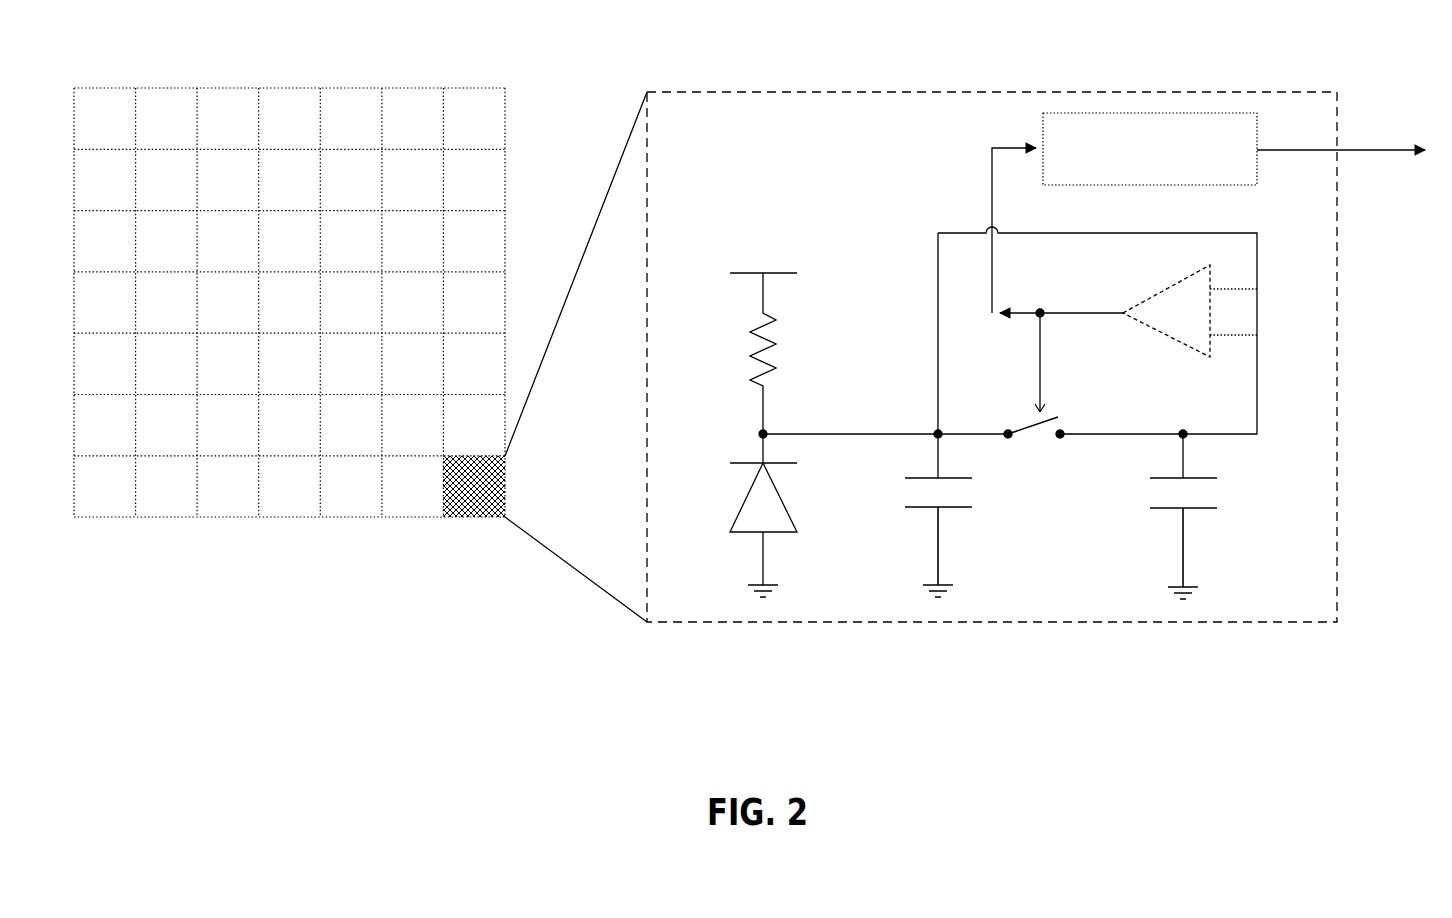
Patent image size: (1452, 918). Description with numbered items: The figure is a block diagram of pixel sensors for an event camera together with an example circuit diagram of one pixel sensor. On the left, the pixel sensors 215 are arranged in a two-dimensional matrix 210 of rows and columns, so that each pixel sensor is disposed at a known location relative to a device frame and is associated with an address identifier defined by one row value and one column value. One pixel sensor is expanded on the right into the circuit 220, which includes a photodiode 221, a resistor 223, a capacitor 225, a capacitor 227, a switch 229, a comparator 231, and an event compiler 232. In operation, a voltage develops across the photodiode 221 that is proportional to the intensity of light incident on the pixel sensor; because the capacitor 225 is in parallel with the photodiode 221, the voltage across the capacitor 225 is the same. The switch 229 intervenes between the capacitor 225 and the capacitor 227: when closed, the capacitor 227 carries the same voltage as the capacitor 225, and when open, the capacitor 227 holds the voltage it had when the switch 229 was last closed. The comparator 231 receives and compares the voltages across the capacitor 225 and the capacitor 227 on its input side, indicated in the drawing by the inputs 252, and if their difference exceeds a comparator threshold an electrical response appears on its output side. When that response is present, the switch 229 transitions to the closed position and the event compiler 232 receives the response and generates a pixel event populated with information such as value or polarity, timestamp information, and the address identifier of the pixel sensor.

The 2D matrix 210 is at (259, 88).
The pixel sensor 215 is at (296, 311).
The circuit 220 is at (694, 92).
The photodiode 221 is at (737, 515).
The resistor 223 is at (751, 353).
The capacitor 225 is at (916, 537).
The capacitor 227 is at (1162, 538).
The switch 229 is at (1022, 438).
The comparator 231 is at (1161, 311).
The event compiler 232 is at (1124, 213).
The comparator reference inputs 252 is at (1262, 285).